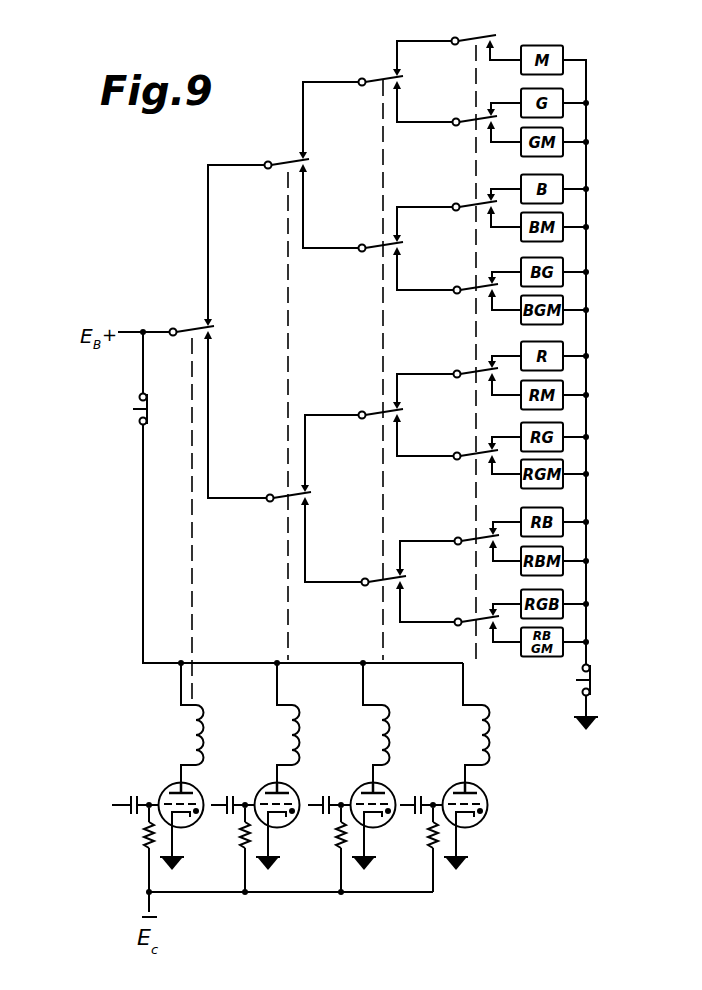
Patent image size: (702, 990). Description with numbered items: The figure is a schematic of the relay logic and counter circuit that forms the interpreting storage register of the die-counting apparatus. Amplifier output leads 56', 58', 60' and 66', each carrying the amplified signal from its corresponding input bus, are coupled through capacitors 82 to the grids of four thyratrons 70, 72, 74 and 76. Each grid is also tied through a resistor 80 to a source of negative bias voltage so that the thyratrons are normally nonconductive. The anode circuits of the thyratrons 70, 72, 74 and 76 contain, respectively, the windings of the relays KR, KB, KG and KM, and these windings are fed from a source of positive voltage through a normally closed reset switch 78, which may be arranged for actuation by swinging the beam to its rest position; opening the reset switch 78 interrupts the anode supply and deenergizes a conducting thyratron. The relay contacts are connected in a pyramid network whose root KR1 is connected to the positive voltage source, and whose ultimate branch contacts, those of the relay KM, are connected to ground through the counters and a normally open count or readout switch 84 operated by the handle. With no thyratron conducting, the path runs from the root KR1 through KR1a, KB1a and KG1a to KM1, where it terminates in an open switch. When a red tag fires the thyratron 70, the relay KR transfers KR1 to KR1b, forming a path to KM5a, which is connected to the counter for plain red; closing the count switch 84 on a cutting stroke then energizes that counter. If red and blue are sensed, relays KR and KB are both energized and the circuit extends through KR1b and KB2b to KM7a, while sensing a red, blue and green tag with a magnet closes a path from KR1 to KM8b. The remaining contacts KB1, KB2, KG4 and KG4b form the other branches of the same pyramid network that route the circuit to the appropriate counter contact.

The output lead 56' is at (108, 785).
The output lead 58' is at (224, 823).
The output lead 60' is at (319, 822).
The output lead 66' is at (411, 822).
The thyratron 70 is at (170, 789).
The thyratron 72 is at (266, 789).
The thyratron 74 is at (361, 789).
The thyratron 76 is at (453, 789).
The reset switch 78 is at (148, 411).
The resistor 80 is at (144, 835).
The capacitor 82 is at (130, 815).
The count or readout switch 84 is at (582, 678).
The relay contact KM1 is at (468, 38).
The relay contact KG1a is at (400, 74).
The relay contact KB1 is at (280, 161).
The relay contact KB1a is at (306, 156).
The relay contact KR1 is at (188, 326).
The relay contact KR1a is at (211, 324).
The relay contact KR1b is at (211, 341).
The relay contact KB2 is at (282, 494).
The relay contact KB2b is at (308, 506).
The relay contact KG4 is at (380, 579).
The relay contact KG4b is at (404, 590).
The relay contact KM5a is at (489, 362).
The relay contact KM7a is at (490, 531).
The relay contact KM8b is at (490, 634).
The relay KR is at (200, 728).
The relay KB is at (298, 728).
The relay KG is at (386, 728).
The relay KM is at (484, 728).